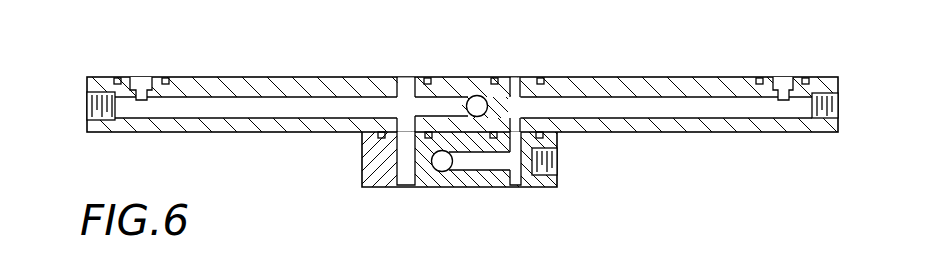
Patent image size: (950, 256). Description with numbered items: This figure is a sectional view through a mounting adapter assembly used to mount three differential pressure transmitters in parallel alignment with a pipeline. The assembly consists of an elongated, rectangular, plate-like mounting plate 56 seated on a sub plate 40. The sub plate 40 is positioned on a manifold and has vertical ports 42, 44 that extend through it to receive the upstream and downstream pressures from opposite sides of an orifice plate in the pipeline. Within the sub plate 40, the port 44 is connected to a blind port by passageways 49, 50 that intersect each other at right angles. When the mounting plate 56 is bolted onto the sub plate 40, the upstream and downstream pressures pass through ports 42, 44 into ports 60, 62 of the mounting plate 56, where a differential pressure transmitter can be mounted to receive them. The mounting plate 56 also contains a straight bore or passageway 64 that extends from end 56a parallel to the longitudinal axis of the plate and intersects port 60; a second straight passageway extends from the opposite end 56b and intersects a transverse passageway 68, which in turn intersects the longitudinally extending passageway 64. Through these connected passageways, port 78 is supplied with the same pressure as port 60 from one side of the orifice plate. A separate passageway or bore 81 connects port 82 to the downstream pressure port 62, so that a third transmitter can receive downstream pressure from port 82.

The sub plate 40 is at (362, 164).
The vertical port 42 is at (403, 183).
The vertical port 44 is at (522, 183).
The passageway 49 is at (483, 168).
The passageway 50 is at (442, 171).
The mounting plate 56 is at (660, 77).
The end of mounting plate 56a is at (87, 126).
The end of mounting plate 56b is at (838, 121).
The port 60 is at (403, 82).
The port 62 is at (522, 82).
The passageway 64 is at (233, 90).
The transverse passageway 68 is at (480, 88).
The port 78 is at (141, 85).
The bore 81 is at (673, 112).
The port 82 is at (785, 80).